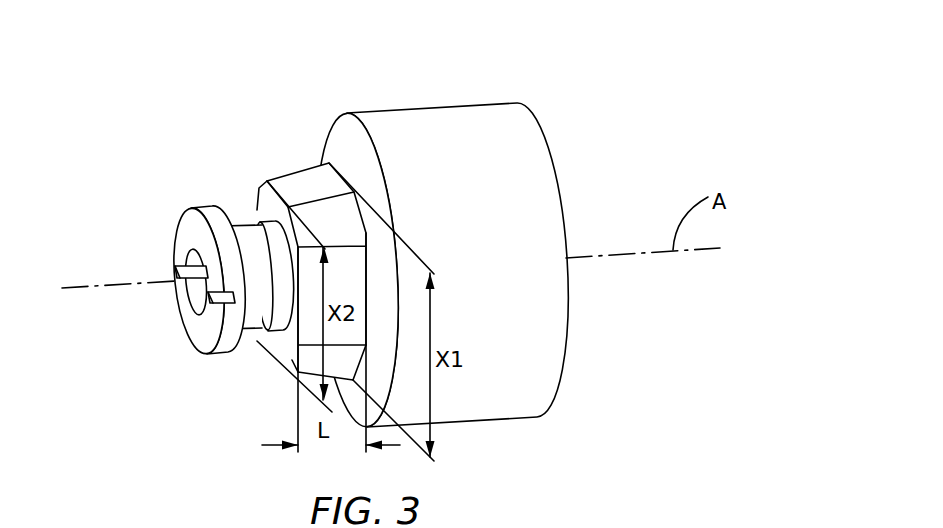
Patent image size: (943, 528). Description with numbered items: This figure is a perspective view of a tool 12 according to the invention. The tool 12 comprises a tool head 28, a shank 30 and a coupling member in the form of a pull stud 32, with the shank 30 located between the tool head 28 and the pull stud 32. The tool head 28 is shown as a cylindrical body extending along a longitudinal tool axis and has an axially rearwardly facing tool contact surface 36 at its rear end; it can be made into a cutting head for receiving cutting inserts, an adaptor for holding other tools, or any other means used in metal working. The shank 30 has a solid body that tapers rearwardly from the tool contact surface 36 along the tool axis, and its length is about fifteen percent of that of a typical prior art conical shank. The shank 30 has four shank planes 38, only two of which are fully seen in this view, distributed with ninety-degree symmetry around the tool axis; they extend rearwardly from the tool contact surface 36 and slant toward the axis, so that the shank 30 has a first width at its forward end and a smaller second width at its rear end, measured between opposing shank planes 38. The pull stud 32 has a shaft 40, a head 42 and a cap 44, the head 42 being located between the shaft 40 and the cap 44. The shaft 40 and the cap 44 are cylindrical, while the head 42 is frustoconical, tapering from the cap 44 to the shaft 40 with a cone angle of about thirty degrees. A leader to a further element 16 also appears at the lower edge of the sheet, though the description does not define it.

The tool 12 is at (329, 224).
The base member 16 is at (100, 527).
The tool head 28 is at (471, 234).
The shank 30 is at (288, 225).
The pull stud 32 is at (173, 223).
The tool contact surface 36 is at (343, 157).
The shank planes 38 is at (300, 183).
The shaft 40 is at (270, 230).
The head 42 is at (242, 227).
The cap 44 is at (213, 213).